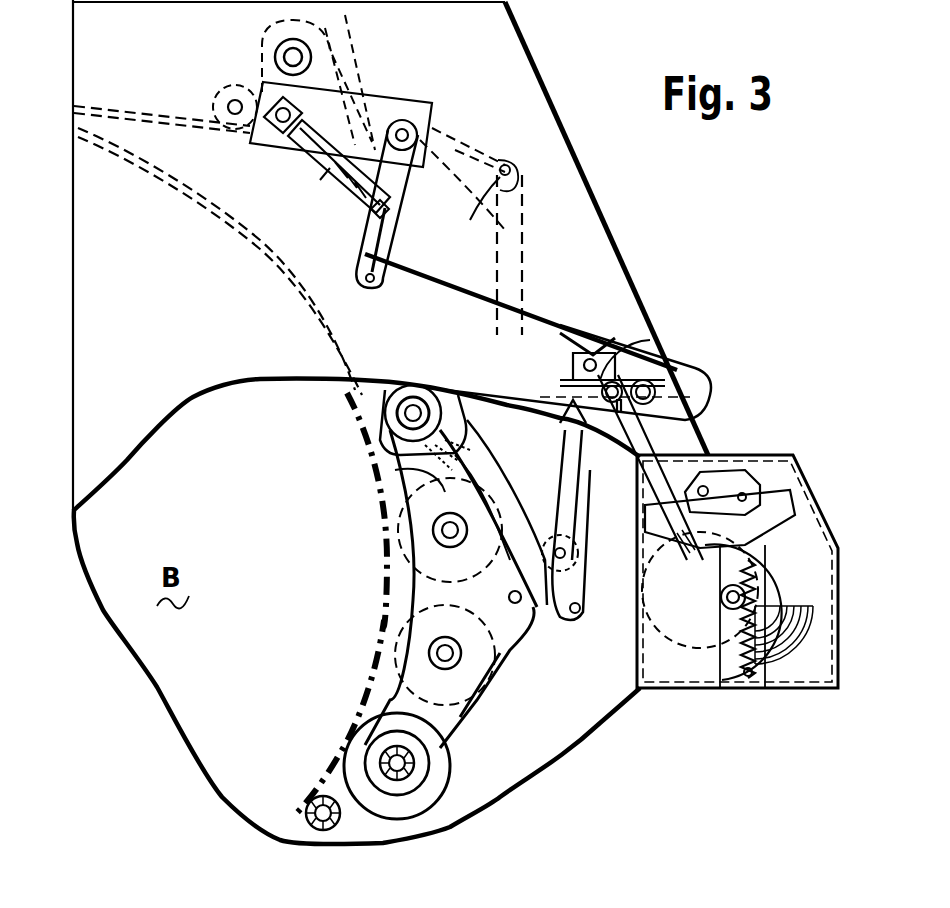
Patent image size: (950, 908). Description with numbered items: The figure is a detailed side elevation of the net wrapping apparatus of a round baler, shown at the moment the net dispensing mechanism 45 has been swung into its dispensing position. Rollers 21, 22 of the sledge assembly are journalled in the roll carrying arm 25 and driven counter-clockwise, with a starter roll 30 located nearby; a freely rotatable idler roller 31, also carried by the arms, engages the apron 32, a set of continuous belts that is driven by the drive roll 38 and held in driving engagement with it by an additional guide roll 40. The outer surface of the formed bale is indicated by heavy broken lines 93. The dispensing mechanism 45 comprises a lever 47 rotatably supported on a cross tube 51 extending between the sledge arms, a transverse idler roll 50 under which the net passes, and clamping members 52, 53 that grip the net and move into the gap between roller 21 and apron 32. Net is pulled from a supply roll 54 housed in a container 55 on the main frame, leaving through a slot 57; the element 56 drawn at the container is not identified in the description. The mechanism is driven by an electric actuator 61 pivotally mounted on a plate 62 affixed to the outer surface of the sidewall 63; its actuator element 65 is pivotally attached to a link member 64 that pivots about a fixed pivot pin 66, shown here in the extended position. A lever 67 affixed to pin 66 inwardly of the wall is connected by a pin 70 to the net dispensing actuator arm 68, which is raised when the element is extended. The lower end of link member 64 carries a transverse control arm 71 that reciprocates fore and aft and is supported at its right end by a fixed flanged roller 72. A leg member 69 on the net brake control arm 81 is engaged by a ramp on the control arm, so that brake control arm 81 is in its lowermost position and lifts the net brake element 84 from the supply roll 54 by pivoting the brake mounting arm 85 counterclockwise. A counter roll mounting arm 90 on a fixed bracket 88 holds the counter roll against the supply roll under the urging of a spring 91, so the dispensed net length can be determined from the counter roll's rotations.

The roller 21 is at (403, 525).
The roller 22 is at (380, 640).
The roll carrying arm 25 is at (350, 750).
The starter roll 30 is at (307, 828).
The idler roller 31 is at (367, 402).
The apron 32 is at (127, 158).
The drive roll 38 is at (285, 28).
The guide roll 40 is at (230, 88).
The net dispensing mechanism 45 is at (513, 523).
The lever 47 is at (537, 613).
The idler roll 50 is at (550, 627).
The cross tube 51 is at (507, 596).
The clamping member 52 is at (367, 453).
The clamping member 53 is at (397, 492).
The supply roll 54 is at (813, 590).
The container 55 is at (838, 643).
The housing 56 is at (803, 487).
The slot 57 is at (628, 478).
The actuator 61 is at (307, 143).
The plate 62 is at (368, 100).
The sidewall 63 is at (512, 97).
The link member 64 is at (373, 238).
The actuator element 65 is at (343, 193).
The pivot pin 66 is at (402, 125).
The lever 67 is at (463, 140).
The net dispensing actuator arm 68 is at (517, 248).
The leg member 69 is at (617, 353).
The pin 70 is at (517, 162).
The control arm 71 is at (443, 313).
The flanged roller 72 is at (655, 365).
The net brake control arm 81 is at (703, 407).
The net brake element 84 is at (793, 545).
The brake mounting arm 85 is at (725, 660).
The fixed bracket 88 is at (687, 614).
The counter roll mounting arm 90 is at (717, 473).
The spring 91 is at (733, 660).
The heavy broken lines 93 is at (370, 468).